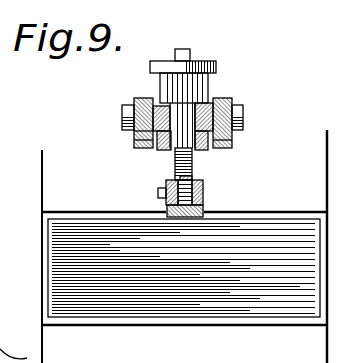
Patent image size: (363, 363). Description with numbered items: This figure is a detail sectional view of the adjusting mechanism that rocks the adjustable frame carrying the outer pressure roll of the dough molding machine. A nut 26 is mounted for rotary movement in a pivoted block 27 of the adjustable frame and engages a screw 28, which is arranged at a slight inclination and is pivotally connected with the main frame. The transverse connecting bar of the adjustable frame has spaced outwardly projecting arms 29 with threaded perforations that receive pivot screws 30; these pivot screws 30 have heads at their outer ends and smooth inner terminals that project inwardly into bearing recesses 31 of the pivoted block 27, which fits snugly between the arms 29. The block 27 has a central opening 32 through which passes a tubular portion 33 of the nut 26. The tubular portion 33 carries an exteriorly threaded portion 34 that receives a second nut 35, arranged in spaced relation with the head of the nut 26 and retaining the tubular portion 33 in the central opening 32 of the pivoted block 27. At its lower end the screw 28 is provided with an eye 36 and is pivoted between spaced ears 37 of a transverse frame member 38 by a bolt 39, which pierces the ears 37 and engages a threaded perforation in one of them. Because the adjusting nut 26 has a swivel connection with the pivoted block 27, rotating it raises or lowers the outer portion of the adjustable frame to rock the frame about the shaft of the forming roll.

The nut 26 is at (220, 62).
The pivoted block 27 is at (203, 101).
The screw 28 is at (177, 167).
The arms 29 is at (137, 149).
The pivot screws 30 is at (123, 111).
The bearing recesses 31 is at (133, 100).
The central opening 32 is at (154, 105).
The tubular portion 33 is at (140, 131).
The exteriorly threaded portion 34 is at (191, 152).
The nut 35 is at (170, 152).
The eye 36 is at (185, 213).
The ears 37 is at (204, 185).
The transverse frame member 38 is at (184, 268).
The bolt 39 is at (159, 194).